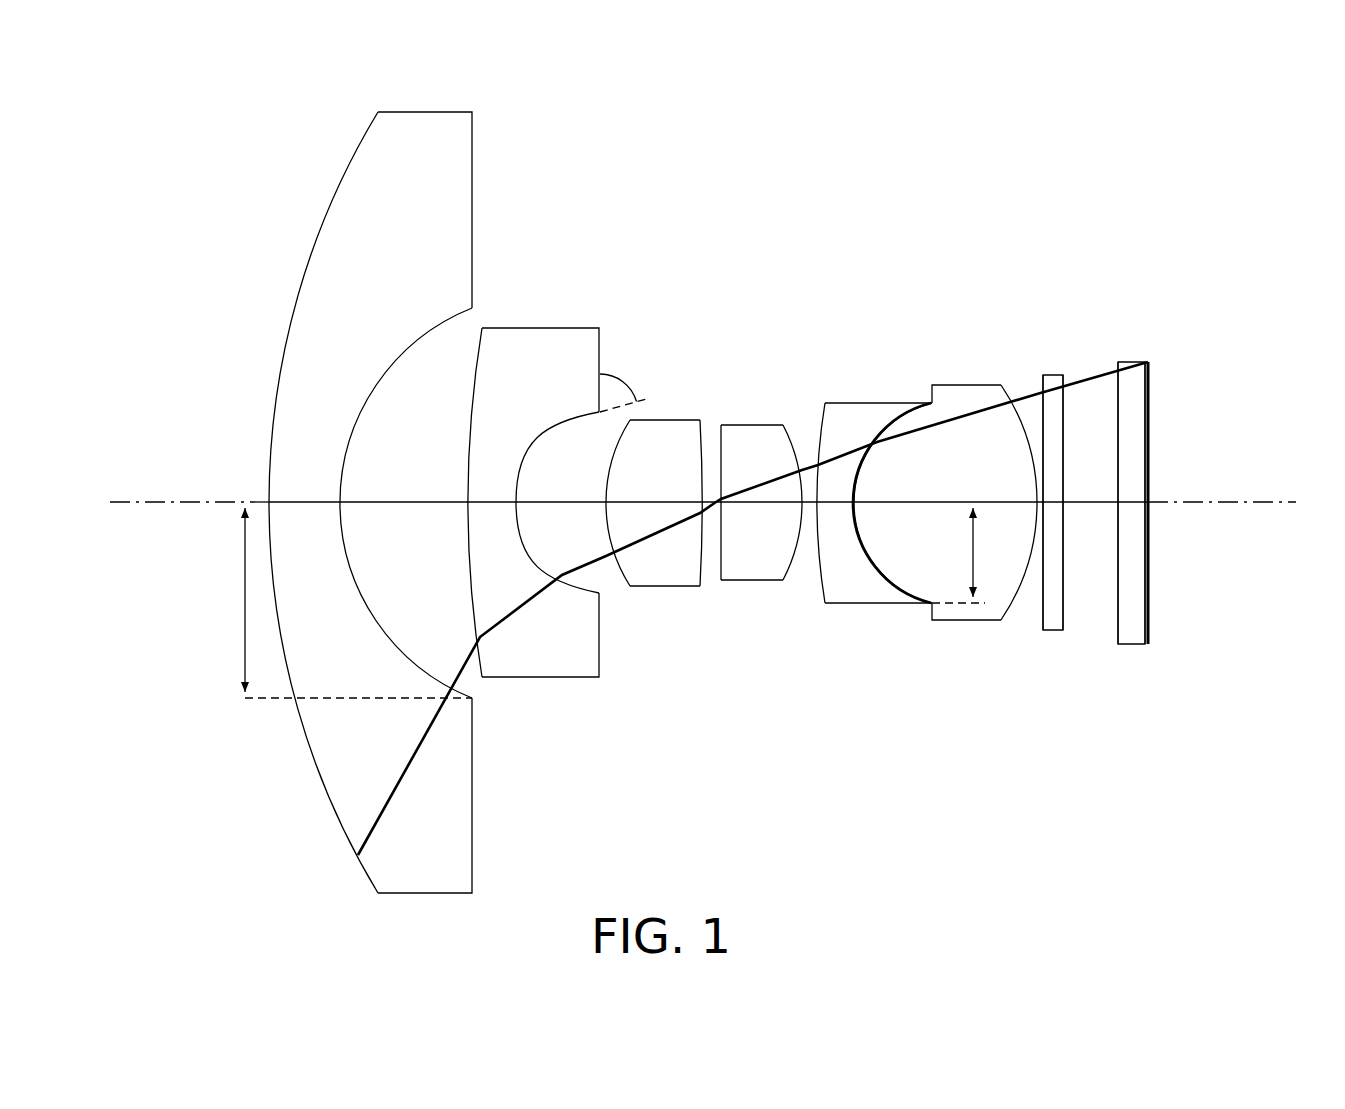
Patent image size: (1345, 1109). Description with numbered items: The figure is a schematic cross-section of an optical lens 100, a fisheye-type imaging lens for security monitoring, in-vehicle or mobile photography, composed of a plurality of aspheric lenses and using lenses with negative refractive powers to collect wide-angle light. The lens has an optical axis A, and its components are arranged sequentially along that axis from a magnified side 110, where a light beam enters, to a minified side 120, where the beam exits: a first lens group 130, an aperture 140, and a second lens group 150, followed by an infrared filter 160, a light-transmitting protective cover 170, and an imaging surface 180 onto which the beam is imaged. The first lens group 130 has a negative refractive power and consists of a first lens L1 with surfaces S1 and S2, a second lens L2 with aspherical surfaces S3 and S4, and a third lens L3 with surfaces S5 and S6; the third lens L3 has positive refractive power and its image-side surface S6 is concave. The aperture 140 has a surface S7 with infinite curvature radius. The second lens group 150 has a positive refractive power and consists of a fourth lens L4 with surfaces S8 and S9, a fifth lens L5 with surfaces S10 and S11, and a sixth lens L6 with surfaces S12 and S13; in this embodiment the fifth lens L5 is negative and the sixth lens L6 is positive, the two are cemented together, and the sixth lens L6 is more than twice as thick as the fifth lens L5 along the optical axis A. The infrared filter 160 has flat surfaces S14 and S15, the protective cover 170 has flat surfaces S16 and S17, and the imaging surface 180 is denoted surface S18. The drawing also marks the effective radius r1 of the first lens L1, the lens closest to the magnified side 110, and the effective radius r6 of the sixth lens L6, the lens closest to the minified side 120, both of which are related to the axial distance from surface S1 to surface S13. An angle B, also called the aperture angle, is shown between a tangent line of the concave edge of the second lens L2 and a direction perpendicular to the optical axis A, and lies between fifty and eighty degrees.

The optical lens 100 is at (1240, 270).
The magnified side 110 is at (58, 518).
The minified side 120 is at (1300, 518).
The first lens group 130 is at (268, 92).
The second lens group 150 is at (722, 90).
The aperture 140 is at (712, 513).
The infrared filter 160 is at (1053, 509).
The light-transmitting protective cover 170 is at (1149, 530).
The imaging surface 180 is at (1180, 503).
The optical axis A is at (189, 508).
The angle B is at (625, 379).
The effective radius of the first lens r1 is at (343, 603).
The effective radius of the sixth lens r6 is at (966, 555).
The first lens L1 is at (370, 502).
The second lens L2 is at (514, 475).
The third lens L3 is at (682, 498).
The fourth lens L4 is at (731, 513).
The fifth lens L5 is at (884, 510).
The sixth lens L6 is at (945, 508).
The surface of the first lens S1 is at (325, 803).
The surface of the first lens S2 is at (430, 668).
The surface of the second lens S3 is at (473, 608).
The surface of the second lens S4 is at (556, 567).
The surface of the third lens S5 is at (615, 567).
The surface of the third lens S6 is at (703, 523).
The surface of the aperture S7 is at (714, 556).
The surface of the fourth lens S8 is at (719, 535).
The surface of the fourth lens S9 is at (792, 568).
The surface of the fifth lens S10 is at (820, 568).
The surface of the fifth lens S11 is at (916, 587).
The surface of the sixth lens S12 is at (890, 576).
The surface of the sixth lens S13 is at (1013, 604).
The surface of the infrared filter S14 is at (1040, 613).
The surface of the infrared filter S15 is at (1067, 594).
The surface of the protective cover S16 is at (1117, 618).
The surface of the protective cover S17 is at (1150, 617).
The surface of the imaging surface S18 is at (1147, 547).